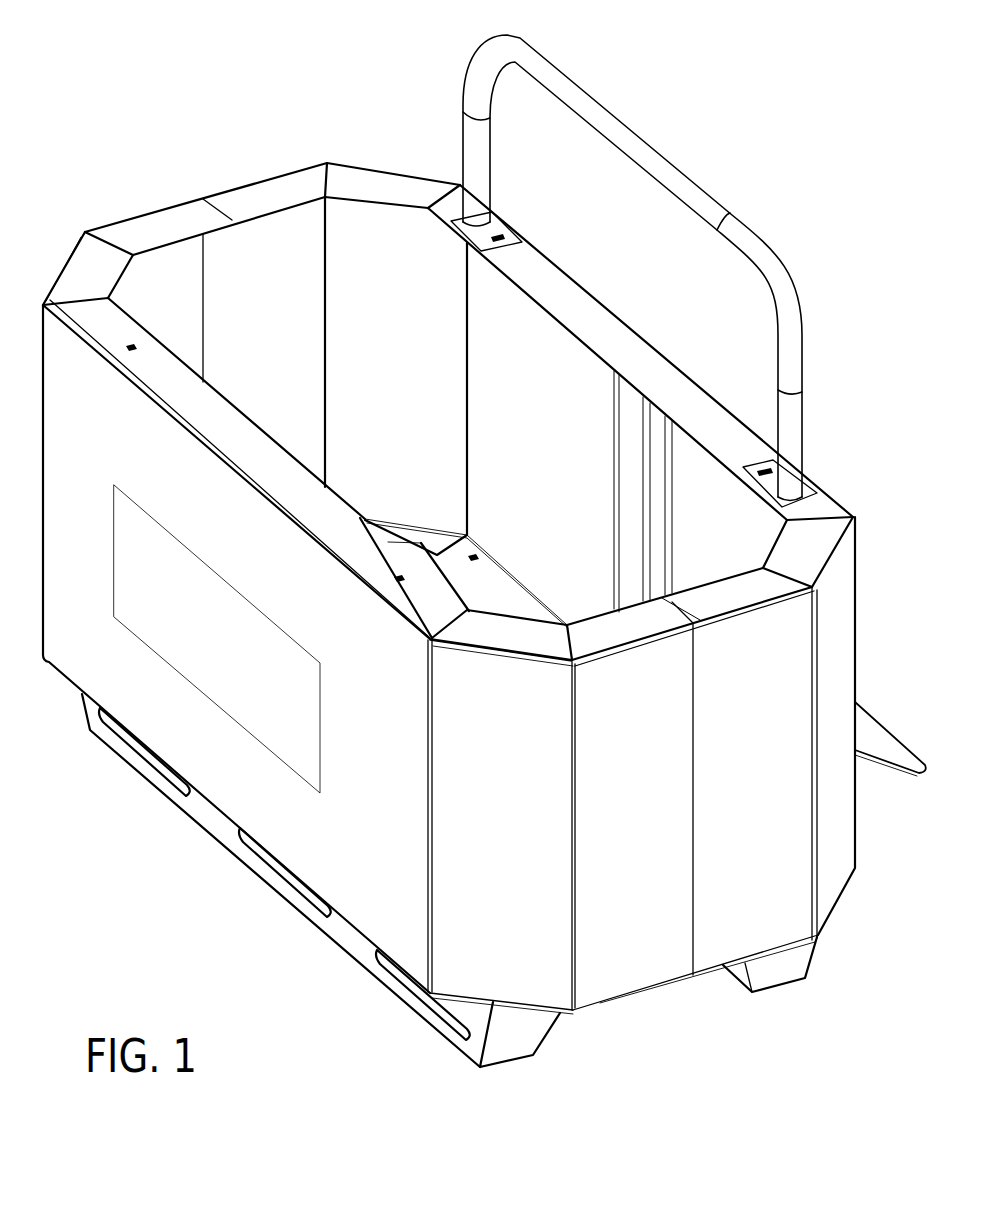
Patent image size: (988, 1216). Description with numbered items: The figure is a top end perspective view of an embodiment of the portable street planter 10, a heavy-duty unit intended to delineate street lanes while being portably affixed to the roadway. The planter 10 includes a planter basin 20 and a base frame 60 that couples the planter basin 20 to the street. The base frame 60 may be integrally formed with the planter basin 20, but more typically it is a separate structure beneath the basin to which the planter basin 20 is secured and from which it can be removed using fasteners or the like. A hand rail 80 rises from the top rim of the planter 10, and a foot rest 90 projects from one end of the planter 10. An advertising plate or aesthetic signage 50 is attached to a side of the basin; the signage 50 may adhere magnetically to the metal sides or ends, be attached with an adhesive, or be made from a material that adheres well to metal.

The portable street planter 10 is at (193, 135).
The planter basin 20 is at (87, 653).
The advertising plate or aesthetic signage 50 is at (285, 722).
The base frame 60 is at (152, 778).
The hand rail 80 is at (592, 104).
The foot rest 90 is at (873, 735).